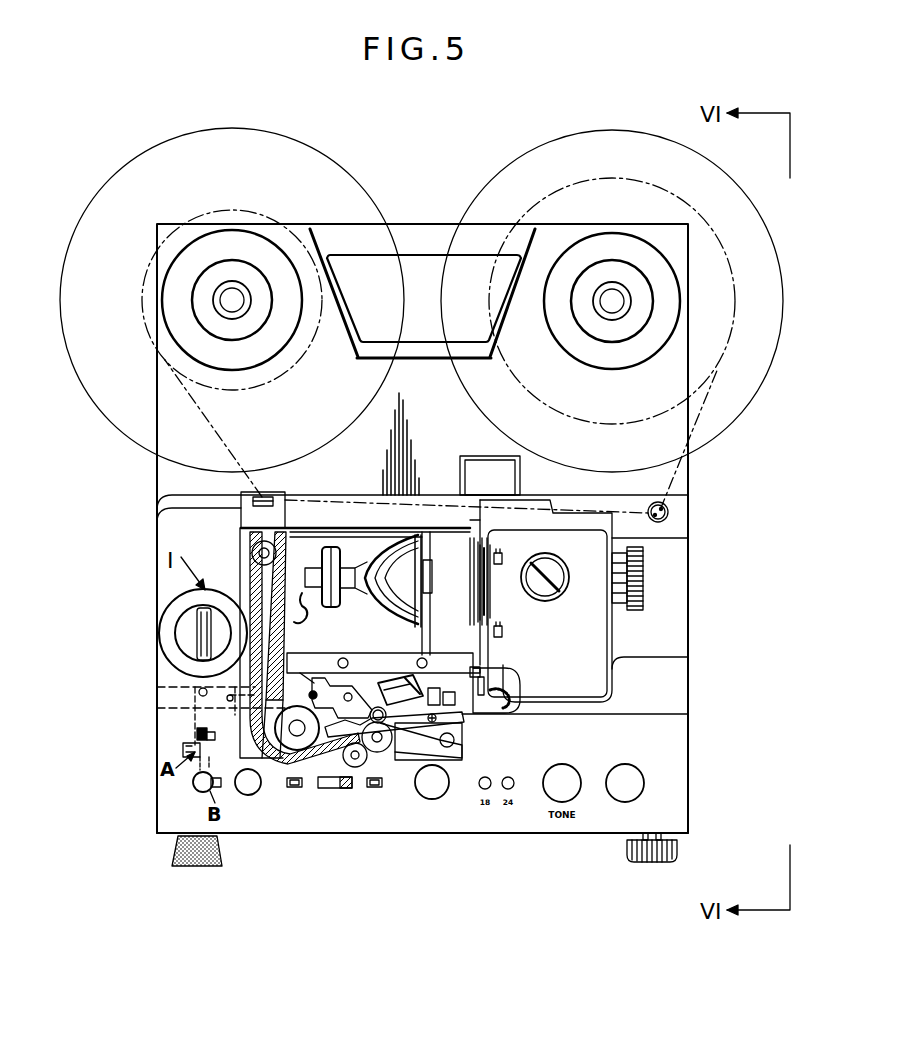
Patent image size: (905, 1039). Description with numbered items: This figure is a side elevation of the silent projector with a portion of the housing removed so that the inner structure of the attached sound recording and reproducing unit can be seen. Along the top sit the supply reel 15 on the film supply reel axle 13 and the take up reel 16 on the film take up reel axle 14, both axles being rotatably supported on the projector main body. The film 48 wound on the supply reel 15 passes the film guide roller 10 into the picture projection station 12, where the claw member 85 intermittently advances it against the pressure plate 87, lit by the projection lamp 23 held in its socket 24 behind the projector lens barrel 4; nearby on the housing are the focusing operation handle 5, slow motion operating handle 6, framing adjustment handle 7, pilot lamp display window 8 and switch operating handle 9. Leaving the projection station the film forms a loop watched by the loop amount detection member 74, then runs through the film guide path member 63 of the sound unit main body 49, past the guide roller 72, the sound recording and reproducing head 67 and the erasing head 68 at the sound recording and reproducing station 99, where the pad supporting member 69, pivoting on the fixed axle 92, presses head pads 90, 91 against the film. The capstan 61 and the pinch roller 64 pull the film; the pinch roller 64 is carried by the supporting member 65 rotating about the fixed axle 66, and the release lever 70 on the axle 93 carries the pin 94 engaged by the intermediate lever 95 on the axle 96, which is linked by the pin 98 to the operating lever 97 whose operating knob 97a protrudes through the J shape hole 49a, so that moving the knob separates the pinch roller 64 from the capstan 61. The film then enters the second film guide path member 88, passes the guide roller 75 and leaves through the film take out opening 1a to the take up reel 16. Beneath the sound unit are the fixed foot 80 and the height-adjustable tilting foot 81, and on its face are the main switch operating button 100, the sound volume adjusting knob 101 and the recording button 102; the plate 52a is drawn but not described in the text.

The film take out opening 1a is at (265, 497).
The projector lens barrel 4 is at (640, 583).
The focusing operation handle 5 is at (566, 585).
The slow motion operating handle 6 is at (502, 558).
The framing adjustment handle 7 is at (504, 633).
The pilot lamp display window 8 is at (478, 468).
The switch operating handle 9 is at (188, 641).
The film guide roller 10 is at (670, 514).
The picture projection station 12 is at (490, 607).
The film supply reel axle 13 is at (608, 300).
The film take up reel axle 14 is at (228, 300).
The supply reel 15 is at (730, 195).
The take up reel 16 is at (362, 208).
The projection lamp 23 is at (410, 584).
The socket 24 is at (329, 545).
The film 48 is at (698, 437).
The sound unit main body 49 is at (680, 744).
The J shape hole 49a is at (200, 791).
The plate 52a is at (316, 668).
The capstan 61 is at (380, 683).
The film guide path member 63 is at (500, 688).
The pinch roller 64 is at (375, 790).
The supporting member 65 is at (407, 748).
The fixed axle 66 is at (452, 742).
The sound recording and reproducing head 67 is at (434, 688).
The erasing head 68 is at (449, 692).
The pad supporting member 69 is at (470, 716).
The release lever 70 is at (335, 680).
The guide roller 72 is at (292, 748).
The loop amount detection member 74 is at (508, 692).
The guide roller 75 is at (254, 552).
The fixed foot 80 is at (210, 864).
The tilting foot 81 is at (627, 850).
The claw member 85 is at (475, 572).
The pressure plate 87 is at (488, 572).
The second film guide path member 88 is at (267, 582).
The head pad 90 is at (465, 740).
The head pad 91 is at (512, 700).
The fixed axle 92 is at (447, 748).
The axle 93 is at (348, 692).
The pin 94 is at (296, 790).
The intermediate lever 95 is at (210, 758).
The axle 96 is at (222, 737).
The operating lever 97 is at (200, 732).
The operating knob 97a is at (185, 750).
The pin 98 is at (199, 691).
The sound recording and reproducing station 99 is at (413, 688).
The main switch operating button 100 is at (340, 790).
The sound volume adjusting knob 101 is at (638, 786).
The recording button 102 is at (243, 795).